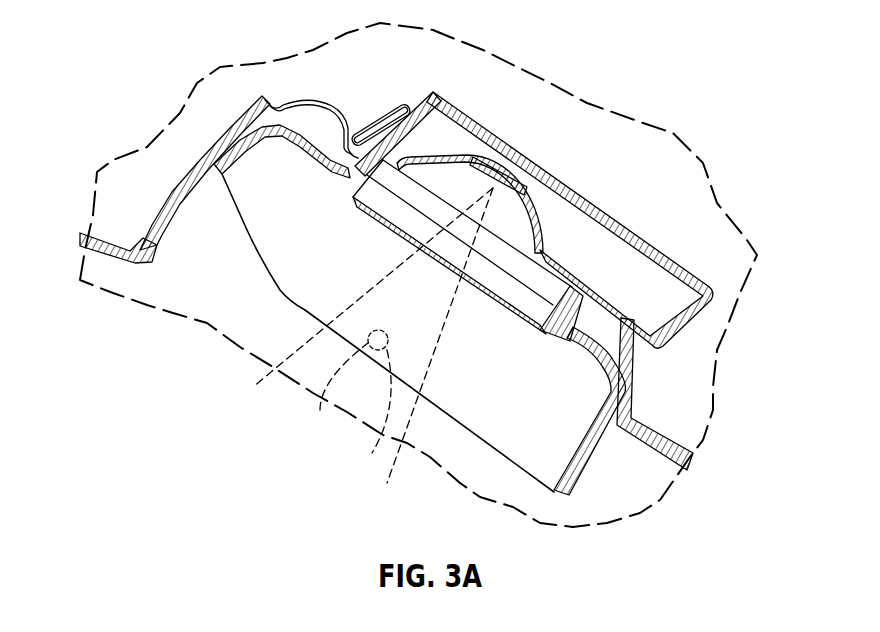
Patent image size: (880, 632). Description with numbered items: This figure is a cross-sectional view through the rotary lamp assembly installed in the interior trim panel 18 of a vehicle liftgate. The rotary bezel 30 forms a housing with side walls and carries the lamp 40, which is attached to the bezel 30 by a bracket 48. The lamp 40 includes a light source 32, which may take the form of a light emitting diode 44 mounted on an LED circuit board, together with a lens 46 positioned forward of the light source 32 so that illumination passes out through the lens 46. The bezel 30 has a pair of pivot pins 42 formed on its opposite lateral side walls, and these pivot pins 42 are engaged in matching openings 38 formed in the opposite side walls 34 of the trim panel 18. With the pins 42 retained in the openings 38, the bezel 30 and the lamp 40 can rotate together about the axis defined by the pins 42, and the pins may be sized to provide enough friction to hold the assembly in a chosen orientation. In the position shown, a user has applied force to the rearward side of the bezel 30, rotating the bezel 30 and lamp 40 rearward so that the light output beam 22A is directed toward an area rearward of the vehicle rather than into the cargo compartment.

The interior trim panel 18 is at (663, 457).
The light output beam 22A is at (262, 388).
The rotary bezel 30 is at (240, 168).
The light source 32 is at (638, 221).
The side walls 34 is at (163, 243).
The openings 38 is at (320, 410).
The lamp 40 is at (366, 84).
The pivot pins 42 is at (373, 335).
The light emitting diode 44 is at (493, 170).
The lens 46 is at (497, 300).
The bracket 48 is at (393, 107).